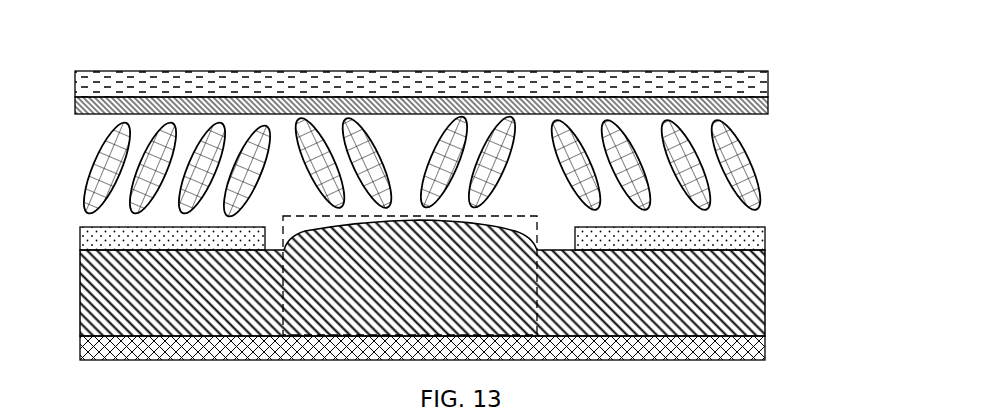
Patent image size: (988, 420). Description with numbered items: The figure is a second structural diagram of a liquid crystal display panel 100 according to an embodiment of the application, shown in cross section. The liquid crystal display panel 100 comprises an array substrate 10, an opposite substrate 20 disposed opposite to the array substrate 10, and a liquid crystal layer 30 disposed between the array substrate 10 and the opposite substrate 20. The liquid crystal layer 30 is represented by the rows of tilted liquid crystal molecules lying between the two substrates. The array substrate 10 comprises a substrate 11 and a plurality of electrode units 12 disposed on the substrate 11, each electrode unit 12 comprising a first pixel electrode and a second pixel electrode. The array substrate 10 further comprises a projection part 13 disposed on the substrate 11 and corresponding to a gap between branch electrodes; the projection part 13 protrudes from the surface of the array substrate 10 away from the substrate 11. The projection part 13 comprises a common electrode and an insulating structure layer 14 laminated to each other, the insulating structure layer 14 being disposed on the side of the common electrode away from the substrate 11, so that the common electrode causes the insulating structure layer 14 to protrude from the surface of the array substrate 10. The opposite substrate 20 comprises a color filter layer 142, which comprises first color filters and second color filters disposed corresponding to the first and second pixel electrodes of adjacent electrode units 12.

The liquid crystal display panel 100 is at (108, 50).
The opposite substrate 20 is at (747, 85).
The color filter layer 142 is at (772, 106).
The liquid crystal layer 30 is at (756, 165).
The array substrate 10 is at (484, 292).
The substrate 11 is at (455, 352).
The electrode units 12 is at (753, 233).
The projection part 13 is at (540, 274).
The insulating structure layer 14 is at (757, 308).